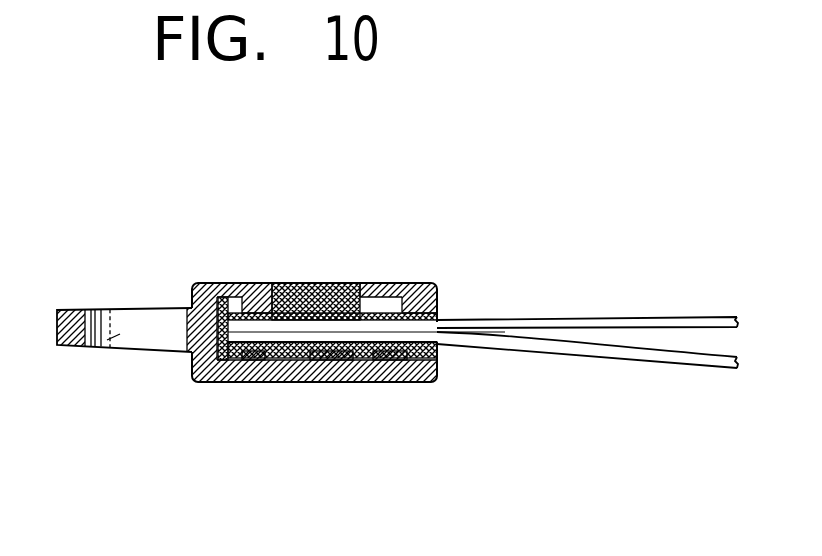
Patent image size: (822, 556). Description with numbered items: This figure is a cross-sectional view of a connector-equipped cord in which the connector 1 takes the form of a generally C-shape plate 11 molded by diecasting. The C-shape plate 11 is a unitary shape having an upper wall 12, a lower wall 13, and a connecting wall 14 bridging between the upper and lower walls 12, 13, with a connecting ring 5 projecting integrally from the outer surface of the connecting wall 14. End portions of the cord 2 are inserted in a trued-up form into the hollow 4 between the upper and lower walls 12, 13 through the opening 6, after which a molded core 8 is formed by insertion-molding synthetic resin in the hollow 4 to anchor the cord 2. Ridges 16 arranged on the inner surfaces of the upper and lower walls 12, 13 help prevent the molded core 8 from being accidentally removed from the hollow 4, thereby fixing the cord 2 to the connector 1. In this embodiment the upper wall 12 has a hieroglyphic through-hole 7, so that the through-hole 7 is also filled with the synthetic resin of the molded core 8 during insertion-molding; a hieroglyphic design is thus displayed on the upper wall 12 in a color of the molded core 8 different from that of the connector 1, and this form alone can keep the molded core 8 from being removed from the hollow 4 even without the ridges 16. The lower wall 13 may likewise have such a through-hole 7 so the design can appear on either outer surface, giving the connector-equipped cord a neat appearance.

The connector 1 is at (210, 257).
The cord 2 is at (615, 360).
The hollow 4 is at (384, 358).
The connecting ring 5 is at (95, 348).
The opening 6 is at (437, 318).
The hieroglyphic through-hole 7 is at (257, 282).
The molded core 8 is at (303, 282).
The C-shape plate 11 is at (440, 288).
The upper wall 12 is at (392, 288).
The lower wall 13 is at (297, 382).
The connecting wall 14 is at (190, 300).
The ridges 16 is at (258, 355).